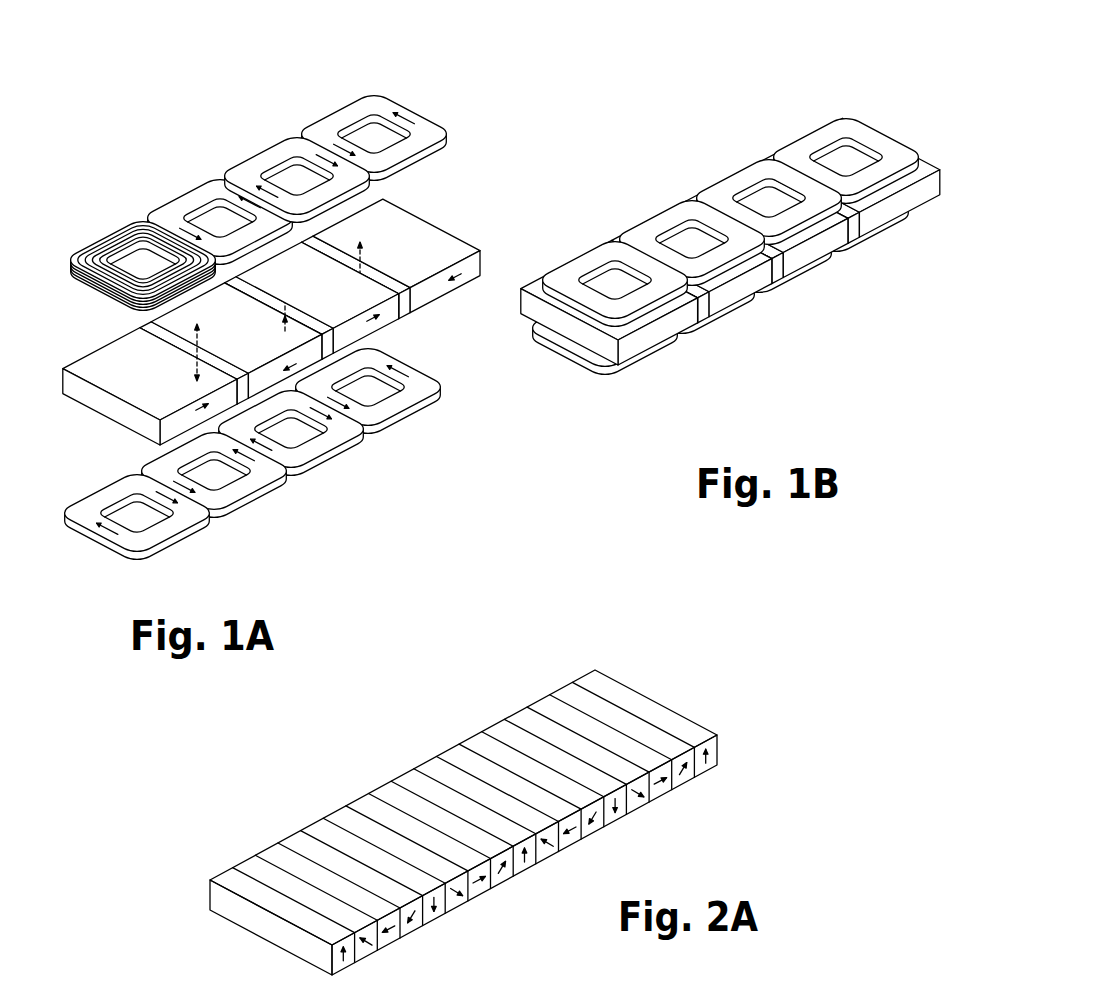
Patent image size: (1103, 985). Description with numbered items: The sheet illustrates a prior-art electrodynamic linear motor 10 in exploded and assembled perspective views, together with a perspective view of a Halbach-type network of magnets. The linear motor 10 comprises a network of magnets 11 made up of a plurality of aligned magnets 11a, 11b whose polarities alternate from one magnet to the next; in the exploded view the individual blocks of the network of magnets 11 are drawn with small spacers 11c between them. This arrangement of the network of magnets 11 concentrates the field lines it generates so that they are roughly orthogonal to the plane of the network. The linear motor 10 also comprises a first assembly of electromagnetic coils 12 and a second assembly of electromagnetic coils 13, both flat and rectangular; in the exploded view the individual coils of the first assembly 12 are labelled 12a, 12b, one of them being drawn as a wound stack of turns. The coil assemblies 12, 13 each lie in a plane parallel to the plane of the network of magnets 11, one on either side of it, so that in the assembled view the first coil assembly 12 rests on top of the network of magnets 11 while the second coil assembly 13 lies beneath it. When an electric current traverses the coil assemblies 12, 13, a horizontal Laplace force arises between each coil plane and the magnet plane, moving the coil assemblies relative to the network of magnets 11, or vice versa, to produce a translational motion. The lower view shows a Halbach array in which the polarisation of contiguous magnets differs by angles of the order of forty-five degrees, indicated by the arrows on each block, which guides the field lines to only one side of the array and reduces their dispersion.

In FIG. 1B, the linear motor 10 is at (722, 241).
In FIG. 1A, the network of magnets 11 is at (269, 277).
In FIG. 1B, the network of magnets 11 is at (527, 300).
In FIG. 2A, the network of magnets 11 is at (635, 700).
In FIG. 1A, the magnet 11a is at (437, 225).
In FIG. 1A, the magnet 11b is at (57, 372).
In FIG. 1A, the spacer between magnet blocks 11c is at (403, 305).
In FIG. 1A, the first assembly of electromagnetic coils 12 is at (398, 95).
In FIG. 1B, the first assembly of electromagnetic coils 12 is at (581, 245).
In FIG. 1A, the first-phase coil 12a is at (297, 134).
In FIG. 1A, the second-phase coil 12b is at (112, 227).
In FIG. 1A, the second assembly of electromagnetic coils 13 is at (397, 444).
In FIG. 1B, the second assembly of electromagnetic coils 13 is at (731, 337).